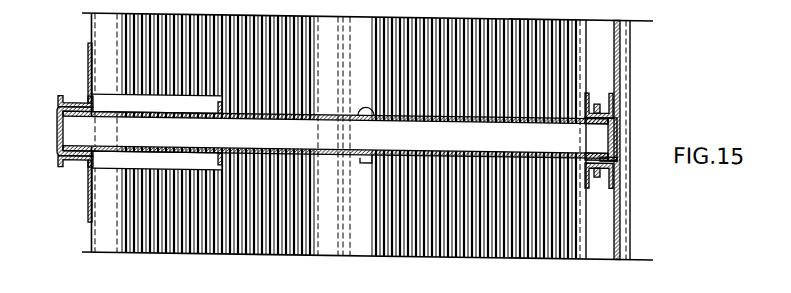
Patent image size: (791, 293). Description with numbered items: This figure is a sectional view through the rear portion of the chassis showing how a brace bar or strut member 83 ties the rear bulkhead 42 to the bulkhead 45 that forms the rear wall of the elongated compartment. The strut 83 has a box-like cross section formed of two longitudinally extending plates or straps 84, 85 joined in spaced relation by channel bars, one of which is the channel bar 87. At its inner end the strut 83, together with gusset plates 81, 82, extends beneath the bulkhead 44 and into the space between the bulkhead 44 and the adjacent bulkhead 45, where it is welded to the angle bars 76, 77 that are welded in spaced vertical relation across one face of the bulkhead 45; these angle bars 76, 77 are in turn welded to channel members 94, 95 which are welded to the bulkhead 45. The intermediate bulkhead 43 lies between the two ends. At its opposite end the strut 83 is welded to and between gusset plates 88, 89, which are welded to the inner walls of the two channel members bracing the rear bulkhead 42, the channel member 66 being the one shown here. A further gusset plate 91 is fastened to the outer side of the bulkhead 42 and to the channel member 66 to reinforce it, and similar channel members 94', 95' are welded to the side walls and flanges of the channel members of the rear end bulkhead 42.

The rear bulkhead 42 is at (89, 243).
The intermediate plate 43 is at (341, 254).
The bulkhead 44 is at (570, 251).
The bulkhead 45 is at (617, 252).
The channel member 66 is at (57, 138).
The angle bar 76 is at (621, 152).
The angle bar 77 is at (620, 124).
The gusset plate 81 is at (566, 111).
The gusset plate 82 is at (568, 155).
The brace bar or strut member 83 is at (78, 137).
The longitudinally extending plate or strap 84 is at (374, 124).
The longitudinally extending plate or strap 85 is at (372, 146).
The channel bar 87 is at (335, 134).
The gusset plate 88 is at (149, 112).
The gusset plate 89 is at (159, 153).
The gusset plate 91 is at (89, 66).
The channel member 94 is at (599, 100).
The channel member 95 is at (599, 180).
The channel member 94' is at (75, 93).
The channel member 95' is at (75, 173).